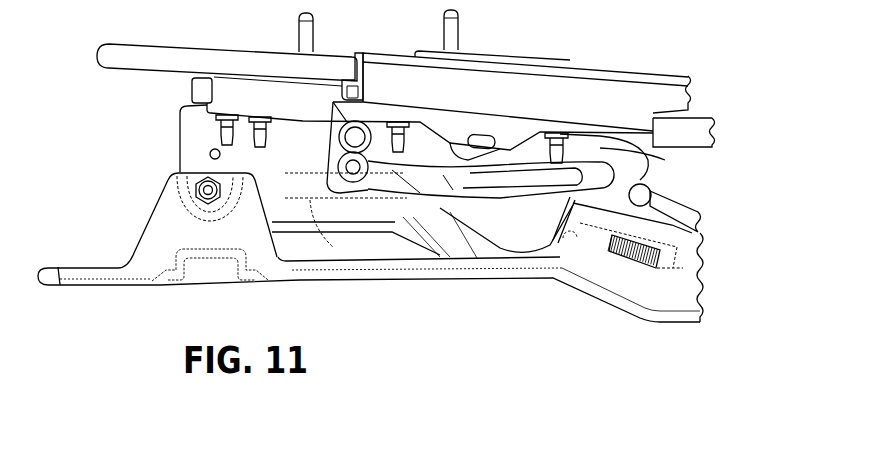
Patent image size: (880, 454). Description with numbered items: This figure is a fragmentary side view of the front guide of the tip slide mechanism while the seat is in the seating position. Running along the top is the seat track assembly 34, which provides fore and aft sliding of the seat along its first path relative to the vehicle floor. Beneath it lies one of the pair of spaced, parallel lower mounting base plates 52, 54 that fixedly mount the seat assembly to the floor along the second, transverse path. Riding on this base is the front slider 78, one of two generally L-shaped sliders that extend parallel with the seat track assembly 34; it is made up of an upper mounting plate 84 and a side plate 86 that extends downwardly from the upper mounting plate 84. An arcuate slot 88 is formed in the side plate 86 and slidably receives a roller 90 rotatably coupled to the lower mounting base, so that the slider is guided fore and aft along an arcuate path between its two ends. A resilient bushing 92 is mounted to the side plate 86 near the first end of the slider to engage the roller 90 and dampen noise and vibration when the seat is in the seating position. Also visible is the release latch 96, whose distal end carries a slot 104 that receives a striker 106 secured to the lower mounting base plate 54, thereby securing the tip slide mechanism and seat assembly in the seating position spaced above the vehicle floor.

The seat track assembly 34 is at (482, 80).
The lower mounting base plate 52 is at (122, 285).
The lower mounting base plate 54 is at (287, 212).
The front slider 78 is at (617, 153).
The upper mounting plate 84 is at (243, 112).
The side plate 86 is at (200, 124).
The arcuate slot 88 is at (497, 187).
The roller 90 is at (200, 184).
The resilient bushing 92 is at (330, 105).
The release latch 96 is at (690, 225).
The slot 104 is at (699, 214).
The striker 106 is at (637, 205).